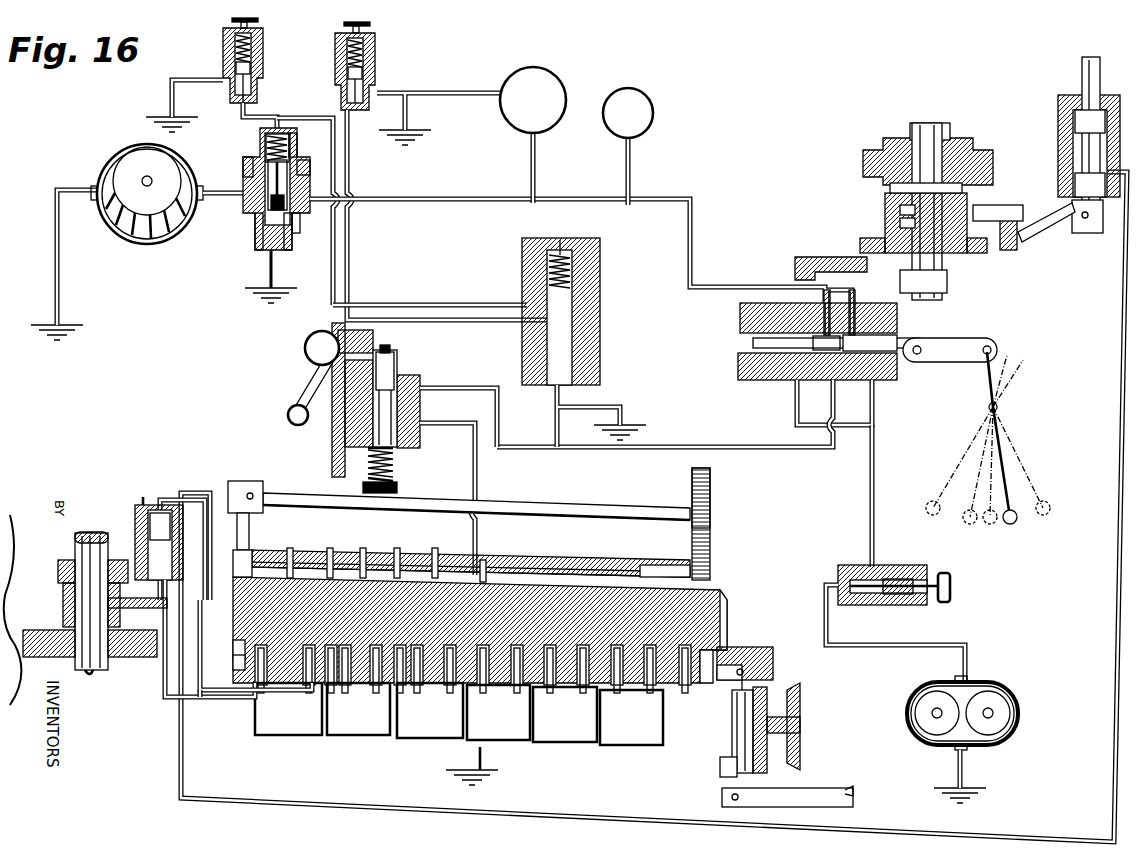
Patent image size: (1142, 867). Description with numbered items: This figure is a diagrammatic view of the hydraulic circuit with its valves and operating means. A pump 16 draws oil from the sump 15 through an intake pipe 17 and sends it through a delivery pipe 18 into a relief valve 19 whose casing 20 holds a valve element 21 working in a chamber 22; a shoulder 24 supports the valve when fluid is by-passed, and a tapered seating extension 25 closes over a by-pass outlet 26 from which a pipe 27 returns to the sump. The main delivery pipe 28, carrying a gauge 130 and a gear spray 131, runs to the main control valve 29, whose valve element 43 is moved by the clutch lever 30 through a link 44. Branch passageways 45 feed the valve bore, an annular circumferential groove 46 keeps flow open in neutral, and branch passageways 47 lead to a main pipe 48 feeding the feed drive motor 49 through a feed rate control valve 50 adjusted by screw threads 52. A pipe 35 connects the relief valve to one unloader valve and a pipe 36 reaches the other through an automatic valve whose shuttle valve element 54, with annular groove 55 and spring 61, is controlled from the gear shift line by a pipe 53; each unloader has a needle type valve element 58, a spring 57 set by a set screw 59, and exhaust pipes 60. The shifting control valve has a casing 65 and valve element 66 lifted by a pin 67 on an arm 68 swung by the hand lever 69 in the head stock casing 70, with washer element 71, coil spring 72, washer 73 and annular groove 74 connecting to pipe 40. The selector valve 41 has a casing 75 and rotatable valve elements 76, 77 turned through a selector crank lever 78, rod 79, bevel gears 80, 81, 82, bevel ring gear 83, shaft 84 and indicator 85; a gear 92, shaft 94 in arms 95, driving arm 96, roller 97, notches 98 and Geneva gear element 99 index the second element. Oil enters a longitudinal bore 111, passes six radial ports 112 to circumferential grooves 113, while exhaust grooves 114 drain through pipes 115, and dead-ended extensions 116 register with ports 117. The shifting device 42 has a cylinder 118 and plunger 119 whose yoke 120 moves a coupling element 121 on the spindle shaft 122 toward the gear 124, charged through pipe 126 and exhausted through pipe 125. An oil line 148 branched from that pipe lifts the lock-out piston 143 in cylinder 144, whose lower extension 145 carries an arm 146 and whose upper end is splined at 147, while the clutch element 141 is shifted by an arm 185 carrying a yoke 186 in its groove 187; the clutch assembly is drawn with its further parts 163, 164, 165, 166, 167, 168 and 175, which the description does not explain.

The sump 15 is at (963, 788).
The pump 16 is at (118, 148).
The intake pipe 17 is at (56, 215).
The delivery pipe 18 is at (220, 192).
The relief valve 19 is at (297, 145).
The casing 20 is at (255, 247).
The valve element 21 is at (313, 172).
The chamber 22 is at (293, 230).
The shoulder 24 is at (250, 155).
The tapered seating extension 25 is at (265, 144).
The by-pass outlet 26 is at (282, 252).
The pipe 27 is at (269, 278).
The main delivery pipe 28 is at (437, 200).
The main control valve 29 is at (755, 380).
The clutch lever 30 is at (1004, 460).
The pipe 35 is at (263, 117).
The pipe 36 is at (435, 304).
The pipe 40 is at (476, 480).
The selector valve 41 is at (400, 552).
The shifting device 42 is at (145, 505).
The valve element 43 is at (900, 645).
The link 44 is at (960, 345).
The branch passageways 45 is at (852, 300).
The annular circumferential groove 46 is at (835, 385).
The branch passageways 47 is at (797, 390).
The main pipe 48 is at (872, 510).
The feed drive motor 49 is at (1012, 705).
The feed rate control valve 50 is at (915, 567).
The screw threads 52 is at (331, 133).
The pipe 53 is at (554, 427).
The valve element 54 is at (525, 283).
The annular groove 55 is at (267, 58).
The springs 57 is at (223, 48).
The needle type valve element 58 is at (267, 78).
The set screw 59 is at (261, 30).
The pipes 60 is at (181, 70).
The spring 61 is at (586, 265).
The casing 65 is at (420, 373).
The valve element 66 is at (401, 362).
The pin 67 is at (390, 350).
The arm 68 is at (377, 333).
The hand lever 69 is at (311, 383).
The head stock casing 70 is at (332, 450).
The washer element 71 is at (395, 448).
The coil spring 72 is at (408, 465).
The washer 73 is at (399, 486).
The annular groove 74 is at (345, 425).
The casing 75 is at (557, 562).
The valve element 76 is at (635, 573).
The valve element 77 is at (315, 555).
The selector crank lever 78 is at (817, 794).
The rod 79 is at (733, 733).
The bevel gear 80 is at (767, 655).
The bevel gear 81 is at (726, 600).
The bevel gear 82 is at (720, 772).
The bevel ring gear 83 is at (771, 692).
The shaft 84 is at (801, 703).
The indicator 85 is at (830, 728).
The gear 92 is at (710, 578).
The shaft 94 is at (579, 504).
The arms 95 is at (710, 506).
The driving arm 96 is at (262, 520).
The roller 97 is at (250, 531).
The notches 98 is at (200, 688).
The Geneva gear element 99 is at (235, 645).
The longitudinal bore 111 is at (435, 564).
The radial ports 112 is at (500, 567).
The circumferential grooves 113 is at (277, 555).
The exhaust grooves 114 is at (240, 678).
The pipes 115 is at (560, 730).
The dead-ended extensions 116 is at (340, 690).
The ports 117 is at (295, 690).
The cylinder 118 is at (161, 483).
The plunger 119 is at (162, 518).
The yoke 120 is at (135, 608).
The coupling element 121 is at (63, 602).
The spindle shaft 122 is at (81, 673).
The gear 124 is at (118, 660).
The pipe 125 is at (74, 535).
The pipe 126 is at (205, 697).
The gauge 130 is at (641, 113).
The gear spray 131 is at (543, 116).
The clutch element 141 is at (885, 221).
The piston 143 is at (1075, 123).
The cylinder 144 is at (1058, 135).
The lower extension 145 is at (1075, 182).
The arm 146 is at (1071, 233).
The spline 147 is at (1099, 93).
The oil line 148 is at (1125, 280).
The bracket 163 is at (803, 257).
The flange 164 is at (860, 246).
The block 165 is at (946, 283).
The spindle 166 is at (927, 125).
The washer 167 is at (890, 188).
The flange 168 is at (860, 155).
The housing 175 is at (885, 205).
The arm 185 is at (1007, 252).
The yoke 186 is at (958, 260).
The groove 187 is at (885, 214).